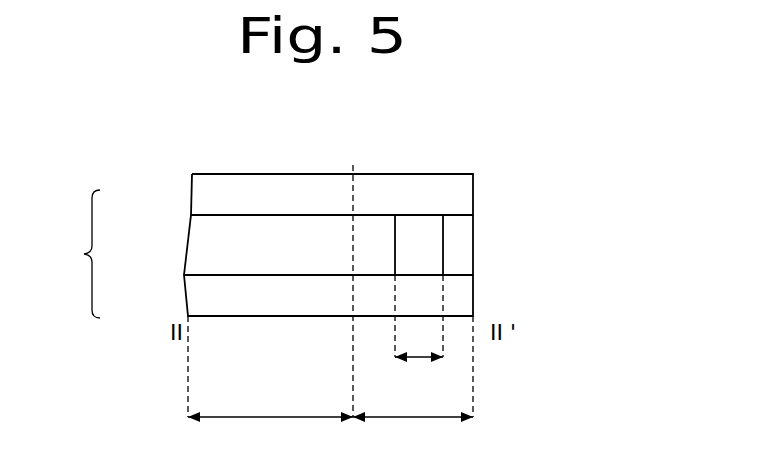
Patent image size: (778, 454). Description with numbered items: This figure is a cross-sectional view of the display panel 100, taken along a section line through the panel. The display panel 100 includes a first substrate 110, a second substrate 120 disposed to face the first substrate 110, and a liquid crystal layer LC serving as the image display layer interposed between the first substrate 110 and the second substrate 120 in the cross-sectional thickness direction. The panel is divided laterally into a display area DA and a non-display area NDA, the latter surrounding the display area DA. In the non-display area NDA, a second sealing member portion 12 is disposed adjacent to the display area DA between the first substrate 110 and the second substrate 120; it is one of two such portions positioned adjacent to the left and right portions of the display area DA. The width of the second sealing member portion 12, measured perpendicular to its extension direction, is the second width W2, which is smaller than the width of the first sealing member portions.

The display panel 100 is at (255, 246).
The first substrate 110 is at (196, 203).
The liquid crystal layer LC is at (204, 251).
The second substrate 120 is at (204, 300).
The second sealing member portion 12 is at (430, 247).
The second width W2 is at (419, 372).
The display area DA is at (270, 432).
The non-display area NDA is at (413, 432).